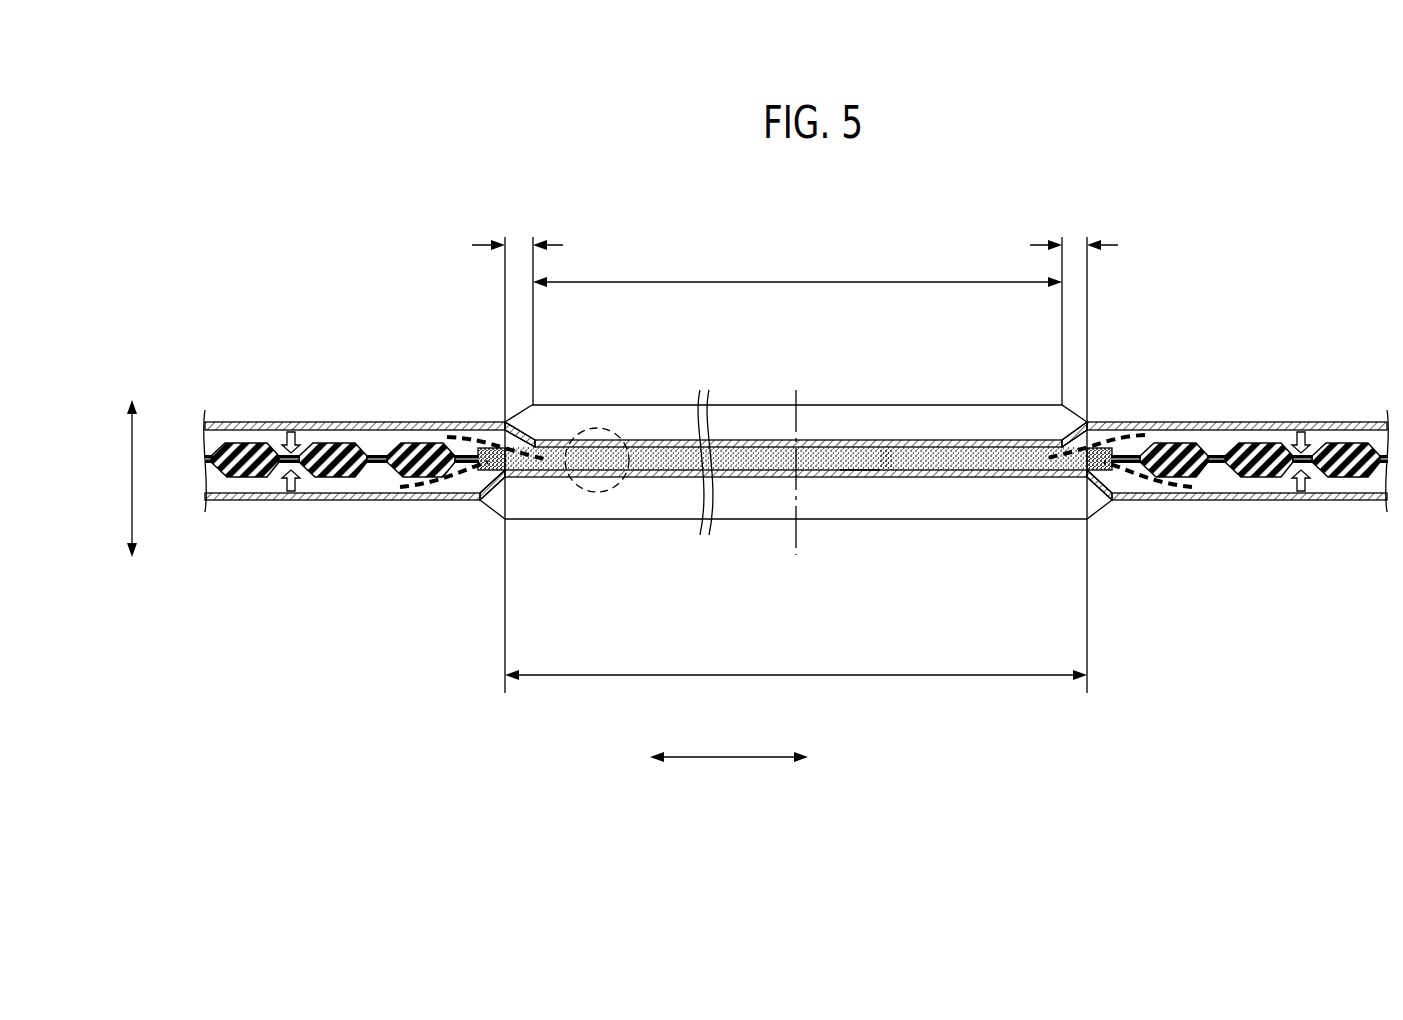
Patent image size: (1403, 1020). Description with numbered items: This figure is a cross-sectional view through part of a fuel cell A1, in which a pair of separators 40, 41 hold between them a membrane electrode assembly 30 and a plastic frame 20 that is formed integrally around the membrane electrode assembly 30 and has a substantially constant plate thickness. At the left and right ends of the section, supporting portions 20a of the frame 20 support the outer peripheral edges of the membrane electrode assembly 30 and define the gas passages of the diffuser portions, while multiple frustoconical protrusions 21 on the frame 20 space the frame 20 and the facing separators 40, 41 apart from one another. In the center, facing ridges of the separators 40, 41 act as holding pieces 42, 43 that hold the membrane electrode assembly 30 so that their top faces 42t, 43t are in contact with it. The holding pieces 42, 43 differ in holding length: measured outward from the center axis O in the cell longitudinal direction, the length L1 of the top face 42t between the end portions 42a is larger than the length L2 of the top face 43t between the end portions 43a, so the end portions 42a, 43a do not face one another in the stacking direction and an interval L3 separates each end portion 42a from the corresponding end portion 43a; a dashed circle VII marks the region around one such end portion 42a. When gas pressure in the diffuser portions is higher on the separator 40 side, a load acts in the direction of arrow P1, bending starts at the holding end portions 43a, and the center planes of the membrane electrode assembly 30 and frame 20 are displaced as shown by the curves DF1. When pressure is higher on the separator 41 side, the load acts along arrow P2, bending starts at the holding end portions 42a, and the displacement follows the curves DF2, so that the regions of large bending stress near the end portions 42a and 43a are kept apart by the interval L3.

The frame 20 is at (769, 432).
The supporting portions 20a is at (463, 447).
The frustoconical protrusions 21 is at (1347, 480).
The membrane electrode assembly 30 is at (945, 480).
The separator 40 is at (312, 516).
The separator 41 is at (436, 408).
The holding piece 42 is at (993, 480).
The end portion of holding piece 42a is at (533, 476).
The top face of holding piece 42t is at (858, 457).
The holding piece 43 is at (972, 440).
The end portion of holding piece 43a is at (543, 440).
The top face of holding piece 43t is at (889, 460).
The fuel cell A1 is at (236, 403).
The arrow P1 is at (1301, 494).
The arrow P2 is at (1302, 428).
The displacement curves DF1 is at (1096, 422).
The displacement curves DF2 is at (1132, 477).
The center axis O is at (784, 531).
The section VII is at (618, 492).
The length L1 is at (796, 662).
The length L2 is at (797, 269).
The interval L3 is at (795, 451).